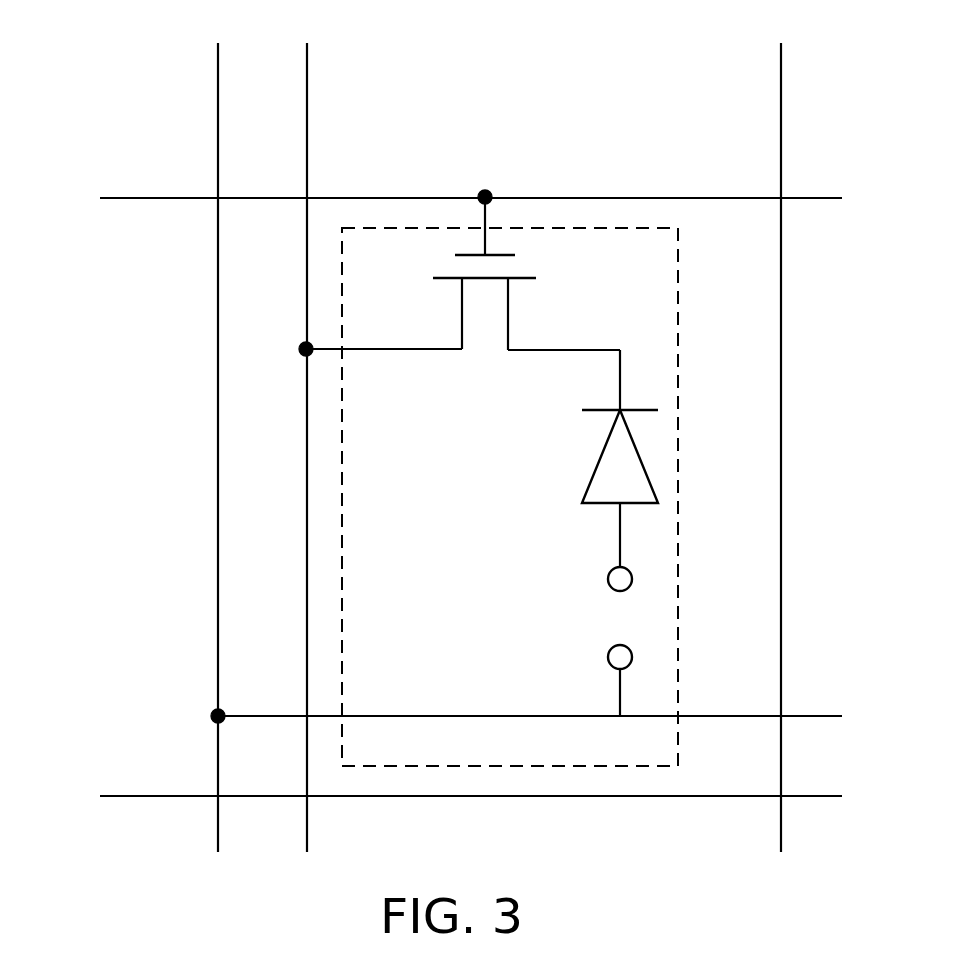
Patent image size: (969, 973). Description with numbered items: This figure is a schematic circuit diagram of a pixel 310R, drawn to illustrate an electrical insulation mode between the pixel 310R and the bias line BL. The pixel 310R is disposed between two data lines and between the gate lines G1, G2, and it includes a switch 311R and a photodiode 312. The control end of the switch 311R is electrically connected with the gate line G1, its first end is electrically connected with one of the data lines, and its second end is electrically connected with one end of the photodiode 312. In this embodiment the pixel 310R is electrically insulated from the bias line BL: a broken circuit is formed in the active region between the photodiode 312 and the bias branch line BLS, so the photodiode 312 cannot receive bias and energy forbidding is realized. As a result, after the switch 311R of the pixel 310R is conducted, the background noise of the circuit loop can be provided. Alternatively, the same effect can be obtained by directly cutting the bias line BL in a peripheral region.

The pixel 310R is at (587, 228).
The switch 311R is at (483, 338).
The photodiode 312 is at (647, 465).
The bias line BL is at (218, 95).
The gate line G1 is at (457, 199).
The gate line G2 is at (457, 797).
The bias branch line BLS is at (808, 716).